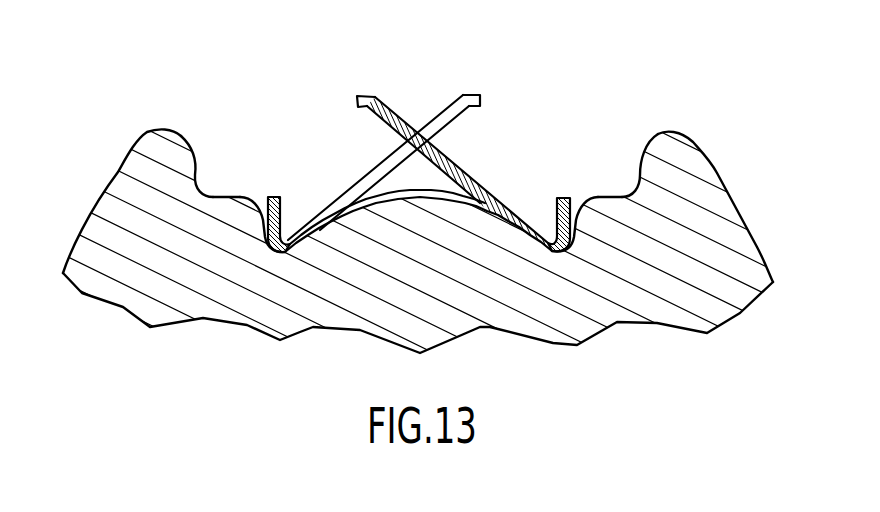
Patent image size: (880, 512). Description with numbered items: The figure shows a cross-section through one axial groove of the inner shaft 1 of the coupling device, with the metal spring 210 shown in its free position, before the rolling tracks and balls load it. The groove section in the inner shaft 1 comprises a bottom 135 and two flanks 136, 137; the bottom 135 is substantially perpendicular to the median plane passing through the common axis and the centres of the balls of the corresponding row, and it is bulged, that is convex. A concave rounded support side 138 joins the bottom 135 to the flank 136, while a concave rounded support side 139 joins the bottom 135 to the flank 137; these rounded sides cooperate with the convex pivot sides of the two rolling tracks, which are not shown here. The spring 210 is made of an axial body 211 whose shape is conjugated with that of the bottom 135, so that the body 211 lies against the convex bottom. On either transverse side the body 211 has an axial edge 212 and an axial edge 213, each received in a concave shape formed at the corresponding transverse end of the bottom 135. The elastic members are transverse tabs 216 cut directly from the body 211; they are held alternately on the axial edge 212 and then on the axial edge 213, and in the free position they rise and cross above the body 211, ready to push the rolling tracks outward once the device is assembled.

The inner shaft 1 is at (675, 286).
The bottom 135 is at (232, 195).
The flank 136 is at (198, 159).
The flank 137 is at (645, 158).
The concave rounded support side 138 is at (209, 194).
The concave rounded support side 139 is at (640, 195).
The spring 210 is at (366, 163).
The axial body 211 is at (400, 194).
The axial edge 212 is at (268, 247).
The axial edge 213 is at (575, 248).
The transverse tabs 216 is at (374, 95).